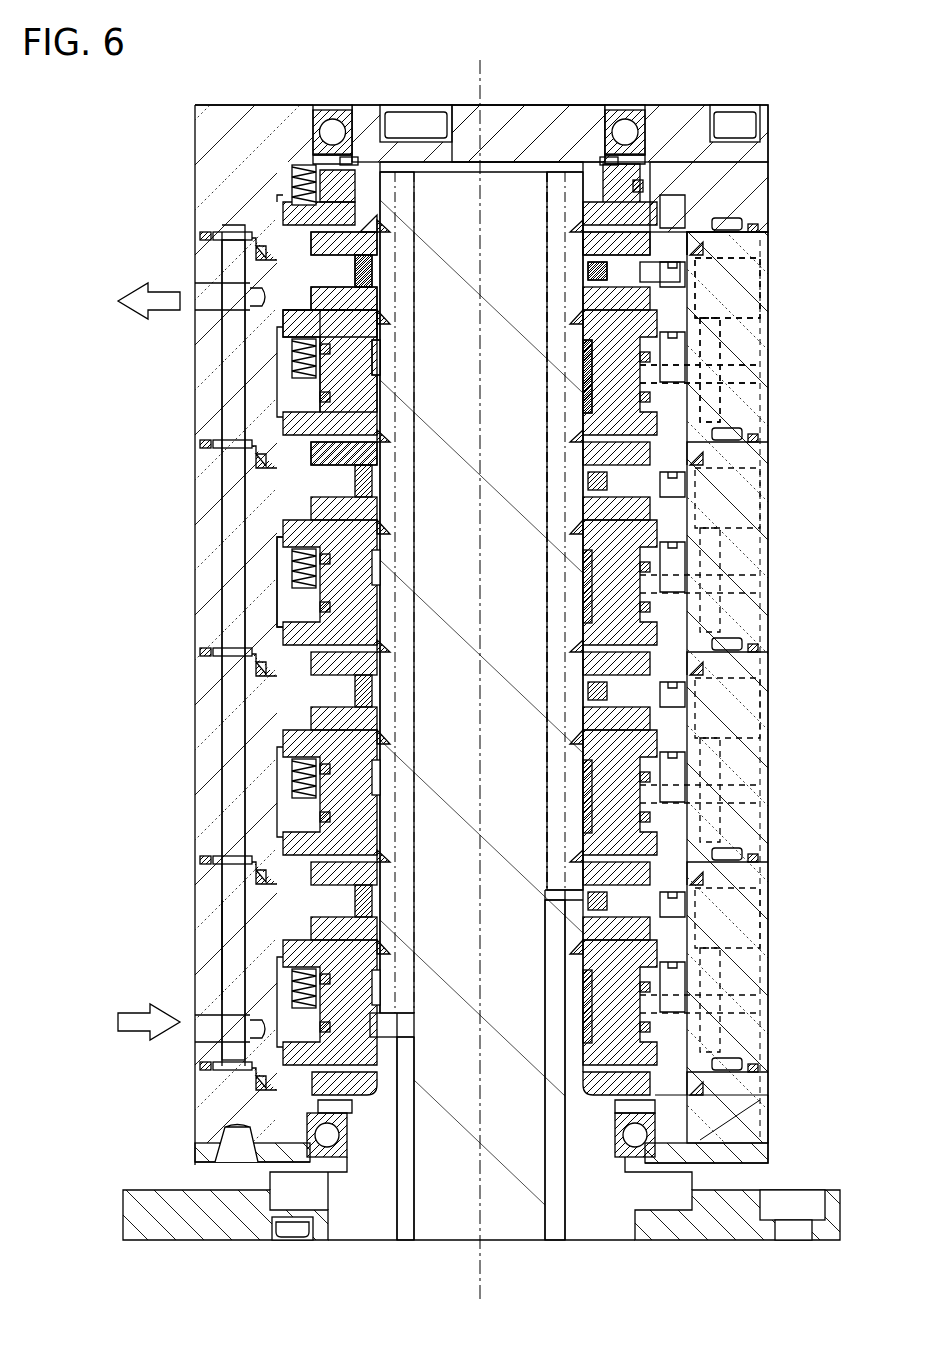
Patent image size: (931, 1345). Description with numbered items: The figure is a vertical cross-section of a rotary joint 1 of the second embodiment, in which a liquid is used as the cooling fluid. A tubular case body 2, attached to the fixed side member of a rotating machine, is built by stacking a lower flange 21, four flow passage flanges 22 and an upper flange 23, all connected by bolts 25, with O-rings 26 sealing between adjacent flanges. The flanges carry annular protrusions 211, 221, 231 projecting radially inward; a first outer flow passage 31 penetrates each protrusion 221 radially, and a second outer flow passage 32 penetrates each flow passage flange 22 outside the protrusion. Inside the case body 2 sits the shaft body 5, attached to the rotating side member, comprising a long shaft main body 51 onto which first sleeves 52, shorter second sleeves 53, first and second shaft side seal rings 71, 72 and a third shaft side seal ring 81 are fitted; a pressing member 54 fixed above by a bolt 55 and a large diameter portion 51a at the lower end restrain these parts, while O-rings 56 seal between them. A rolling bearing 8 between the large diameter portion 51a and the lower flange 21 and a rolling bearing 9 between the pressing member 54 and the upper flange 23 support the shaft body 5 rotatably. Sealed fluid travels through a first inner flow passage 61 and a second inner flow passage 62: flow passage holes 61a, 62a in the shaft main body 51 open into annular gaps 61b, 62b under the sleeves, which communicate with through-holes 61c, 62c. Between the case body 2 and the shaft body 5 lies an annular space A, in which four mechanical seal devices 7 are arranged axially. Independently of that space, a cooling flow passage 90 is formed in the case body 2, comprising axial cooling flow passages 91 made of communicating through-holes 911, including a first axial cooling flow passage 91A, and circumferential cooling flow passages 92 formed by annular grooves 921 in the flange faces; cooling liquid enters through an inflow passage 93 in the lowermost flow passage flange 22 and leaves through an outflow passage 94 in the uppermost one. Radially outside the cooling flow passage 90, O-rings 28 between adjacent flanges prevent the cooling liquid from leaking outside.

The rotary joint 1 is at (800, 108).
The case body 2 is at (778, 166).
The shaft body 5 is at (430, 1243).
The mechanical seal device 7 is at (298, 250).
The rolling bearing 8 is at (350, 1160).
The rolling bearing 9 is at (333, 106).
The lower flange 21 is at (760, 1126).
The flow passage flange 22 is at (760, 333).
The upper flange 23 is at (760, 196).
The bolt 25 is at (736, 115).
The O-ring 26 is at (700, 248).
The O-ring 28 is at (200, 242).
The first outer flow passage 31 is at (762, 400).
The second outer flow passage 32 is at (762, 296).
The shaft main body 51 is at (455, 1232).
The large diameter portion 51a is at (605, 1232).
The first sleeve 52 is at (377, 350).
The second sleeve 53 is at (377, 262).
The pressing member 54 is at (548, 118).
The bolt 55 is at (422, 112).
The O-ring 56 is at (585, 230).
The first inner flow passage 61 is at (420, 1052).
The flow passage hole 61a is at (420, 1027).
The annular gap 61b is at (585, 380).
The through-hole 61c is at (380, 380).
The second inner flow passage 62 is at (545, 312).
The flow passage hole 62a is at (545, 292).
The annular gap 62b is at (370, 270).
The through-hole 62c is at (590, 272).
The first shaft side seal ring 71 is at (377, 298).
The second shaft side seal ring 72 is at (318, 466).
The third shaft side seal ring 81 is at (378, 245).
The cooling flow passage 90 is at (235, 232).
The axial cooling flow passage 91 is at (218, 816).
The first axial cooling flow passage 91A is at (140, 896).
The through-hole 911 is at (220, 385).
The circumferential cooling flow passage 92 is at (136, 658).
The annular groove 921 is at (212, 240).
The inflow passage 93 is at (200, 1028).
The outflow passage 94 is at (195, 302).
The annular protrusion 211 is at (672, 1130).
The annular protrusion 221 is at (695, 360).
The annular protrusion 231 is at (640, 112).
The annular space A is at (667, 278).